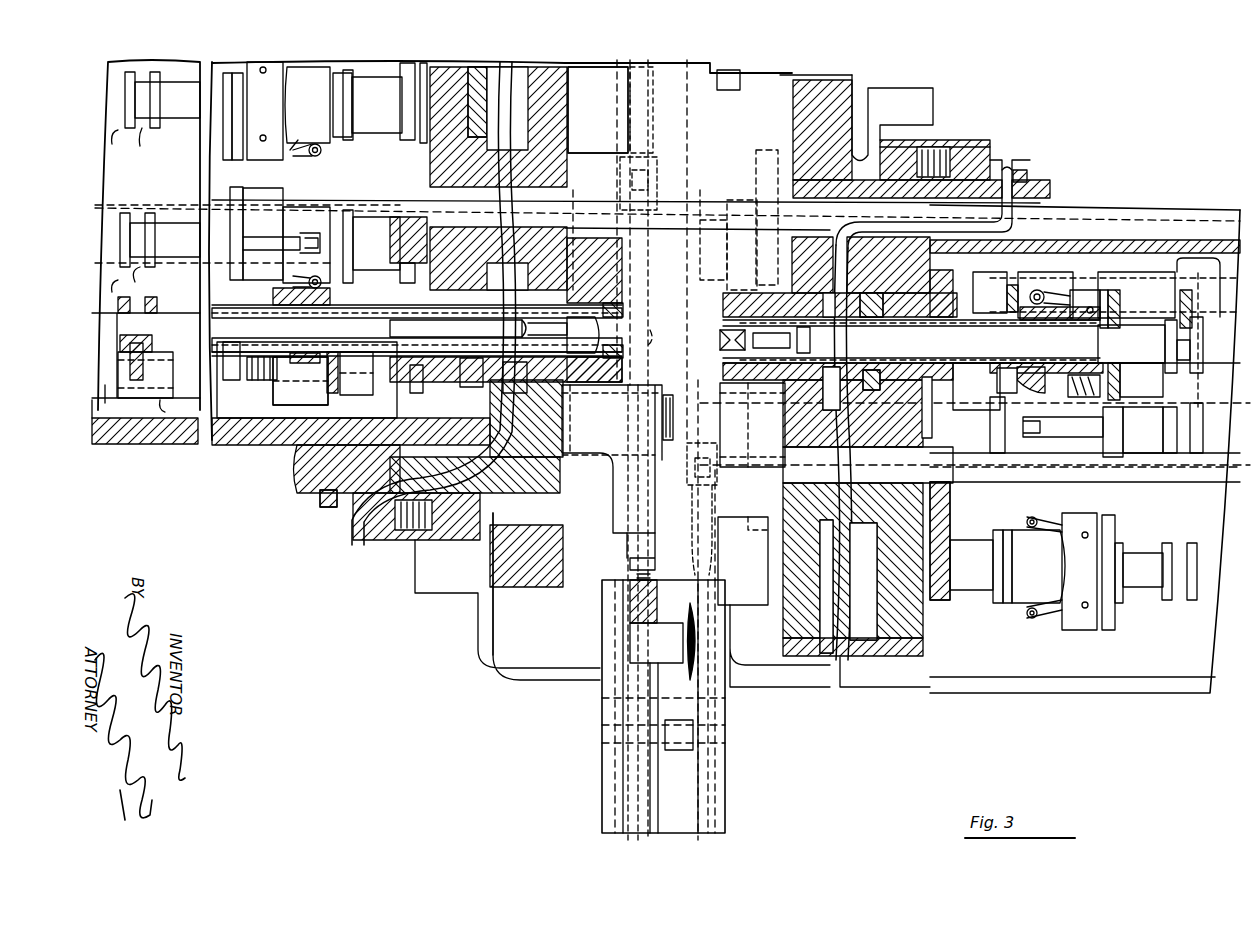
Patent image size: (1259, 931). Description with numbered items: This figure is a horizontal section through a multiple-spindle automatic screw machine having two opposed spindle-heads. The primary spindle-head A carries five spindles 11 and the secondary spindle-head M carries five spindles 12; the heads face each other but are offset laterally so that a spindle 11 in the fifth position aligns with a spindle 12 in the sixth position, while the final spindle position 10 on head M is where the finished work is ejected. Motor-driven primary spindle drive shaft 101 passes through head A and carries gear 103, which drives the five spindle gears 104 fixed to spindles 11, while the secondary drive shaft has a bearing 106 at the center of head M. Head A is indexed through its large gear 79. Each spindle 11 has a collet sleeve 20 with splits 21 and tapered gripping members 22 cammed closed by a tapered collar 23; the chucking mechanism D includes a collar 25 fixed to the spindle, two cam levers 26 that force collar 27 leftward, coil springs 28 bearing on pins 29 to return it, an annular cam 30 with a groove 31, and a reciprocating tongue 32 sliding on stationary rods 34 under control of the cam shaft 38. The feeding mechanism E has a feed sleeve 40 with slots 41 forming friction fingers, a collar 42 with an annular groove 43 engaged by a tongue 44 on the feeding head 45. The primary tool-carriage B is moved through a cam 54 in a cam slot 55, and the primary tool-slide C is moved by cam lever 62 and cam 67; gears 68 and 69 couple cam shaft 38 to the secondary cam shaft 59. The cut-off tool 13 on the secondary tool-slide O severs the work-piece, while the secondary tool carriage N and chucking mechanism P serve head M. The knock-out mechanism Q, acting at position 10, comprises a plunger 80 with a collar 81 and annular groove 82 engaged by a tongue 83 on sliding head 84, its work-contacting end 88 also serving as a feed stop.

The spindle position 10 is at (213, 458).
The primary spindle 11 is at (375, 168).
The secondary spindle 12 is at (745, 285).
The cut-off tool 13 is at (665, 395).
The collet sleeve 20 is at (388, 300).
The split 21 is at (598, 340).
The tapered gripping member 22 is at (612, 350).
The tapered collar 23 is at (608, 295).
The collar 25 is at (296, 155).
The cam lever 26 is at (322, 68).
The collar 27 is at (255, 163).
The coil spring 28 is at (265, 385).
The pin 29 is at (302, 380).
The annular cam 30 is at (303, 210).
The groove 31 is at (322, 150).
The tongue 32 is at (328, 392).
The stationary rod 34 is at (102, 408).
The cam shaft 38 is at (172, 205).
The feed sleeve 40 is at (178, 100).
The slot 41 is at (460, 330).
The collar 42 is at (110, 322).
The annular groove 43 is at (128, 208).
The tongue 44 is at (140, 362).
The feeding head 45 is at (170, 408).
The cam 54 is at (1000, 162).
The cam slot 55 is at (950, 150).
The secondary cam shaft 59 is at (583, 400).
The cam lever 62 is at (652, 150).
The cam 67 is at (640, 312).
The gear 68 is at (760, 152).
The gear 69 is at (752, 522).
The large gear 79 is at (485, 118).
The knock-out plunger 80 is at (925, 345).
The collar 81 is at (1204, 355).
The annular groove 82 is at (1197, 395).
The tongue 83 is at (1198, 290).
The sliding head 84 is at (1186, 285).
The work-contacting end 88 is at (765, 340).
The primary spindle drive shaft 101 is at (700, 200).
The gear 103 is at (410, 185).
The spindle gear 104 is at (392, 112).
The bearing 106 is at (882, 478).
The primary spindle-head A is at (498, 178).
The primary tool-carriage B is at (800, 105).
The primary tool-slide C is at (693, 78).
The primary spindles' chucking mechanism D is at (300, 400).
The primary spindles' feeding mechanism E is at (150, 400).
The secondary spindle-head M is at (857, 511).
The secondary tool carriage N is at (530, 585).
The secondary tool-slide O is at (725, 780).
The secondary spindles' chucking mechanism P is at (1045, 272).
The secondary spindles' knock-out mechanism Q is at (1160, 272).